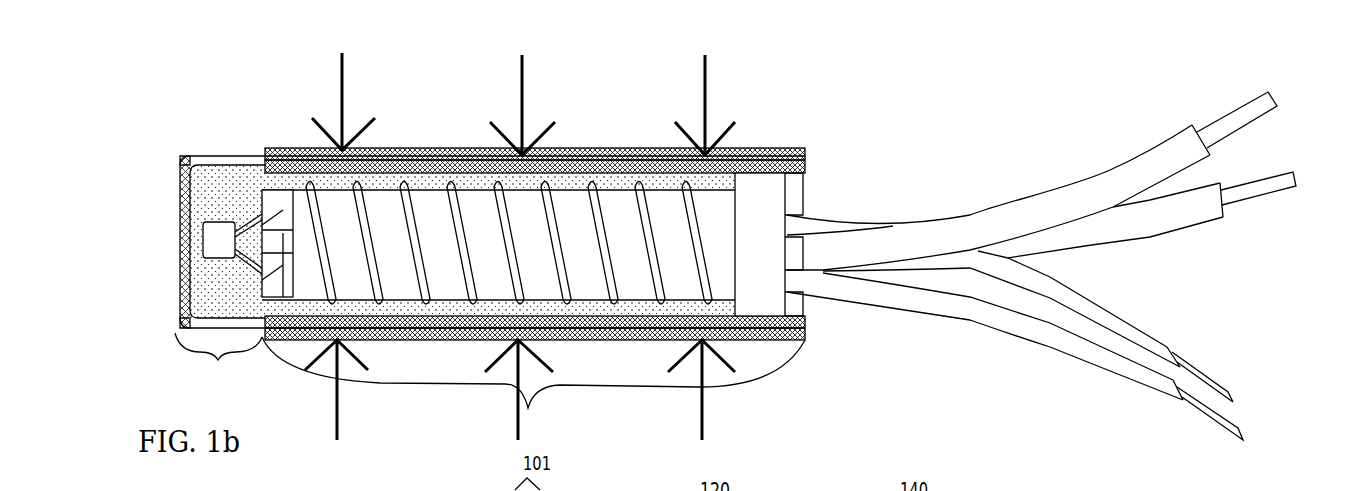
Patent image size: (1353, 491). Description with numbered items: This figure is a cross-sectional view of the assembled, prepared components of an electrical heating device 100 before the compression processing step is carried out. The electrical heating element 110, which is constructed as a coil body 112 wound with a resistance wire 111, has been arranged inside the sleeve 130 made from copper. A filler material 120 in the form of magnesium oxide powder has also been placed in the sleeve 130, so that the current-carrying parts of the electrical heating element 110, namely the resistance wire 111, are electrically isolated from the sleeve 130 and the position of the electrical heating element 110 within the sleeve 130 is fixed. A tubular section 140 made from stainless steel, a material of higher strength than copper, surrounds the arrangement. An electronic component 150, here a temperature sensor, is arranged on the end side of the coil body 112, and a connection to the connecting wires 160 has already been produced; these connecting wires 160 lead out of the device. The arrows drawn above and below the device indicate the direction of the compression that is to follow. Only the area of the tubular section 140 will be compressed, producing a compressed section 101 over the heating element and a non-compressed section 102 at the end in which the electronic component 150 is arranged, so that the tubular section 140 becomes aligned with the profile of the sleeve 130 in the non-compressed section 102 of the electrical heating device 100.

The electrical heating device 100 is at (722, 236).
The compressed section 101 is at (533, 389).
The non-compressed section 102 is at (218, 365).
The electrical heating element 110 is at (427, 153).
The resistance wire 111 is at (557, 165).
The coil body 112 is at (719, 222).
The filler material 120 is at (470, 158).
The sleeve 130 is at (238, 153).
The tubular section 140 is at (372, 152).
The electronic component 150 is at (202, 152).
The connecting wires 160 is at (835, 248).